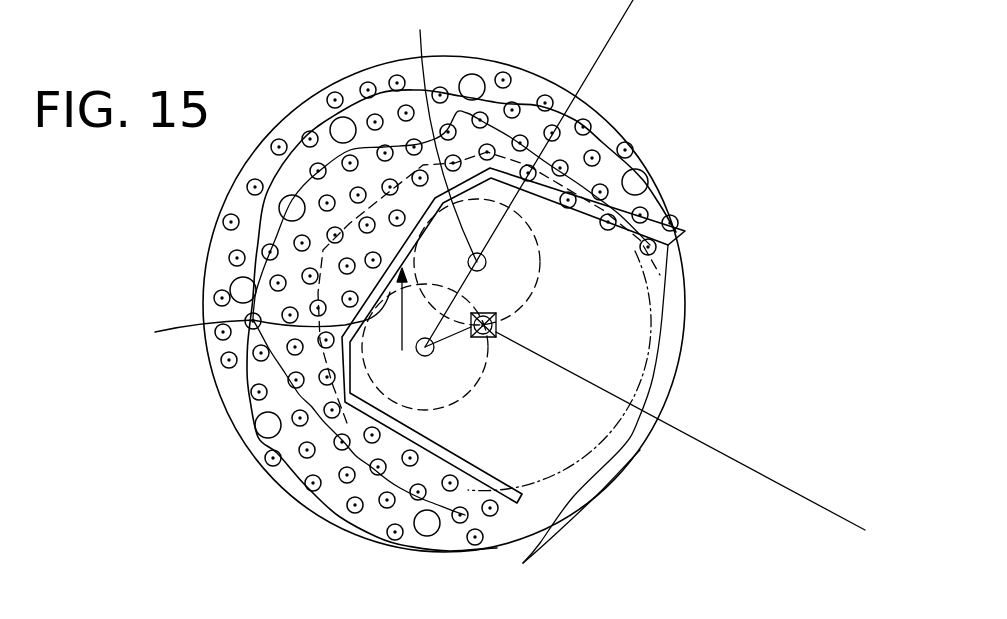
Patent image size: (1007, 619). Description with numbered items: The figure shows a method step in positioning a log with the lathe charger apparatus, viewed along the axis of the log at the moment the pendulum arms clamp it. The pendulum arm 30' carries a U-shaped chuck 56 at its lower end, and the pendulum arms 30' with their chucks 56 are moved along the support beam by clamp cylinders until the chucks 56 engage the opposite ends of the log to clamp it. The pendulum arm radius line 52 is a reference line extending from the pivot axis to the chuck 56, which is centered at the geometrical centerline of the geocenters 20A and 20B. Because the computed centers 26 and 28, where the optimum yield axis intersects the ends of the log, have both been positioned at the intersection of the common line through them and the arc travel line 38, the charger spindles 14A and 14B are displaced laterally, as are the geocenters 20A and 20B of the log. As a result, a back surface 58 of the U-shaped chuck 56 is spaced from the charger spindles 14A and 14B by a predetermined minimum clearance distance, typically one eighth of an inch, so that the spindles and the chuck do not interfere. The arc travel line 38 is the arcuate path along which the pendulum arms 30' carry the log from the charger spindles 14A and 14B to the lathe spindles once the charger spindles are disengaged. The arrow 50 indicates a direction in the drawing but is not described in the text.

The pendulum arm 30' is at (444, 282).
The geocenter 20B is at (513, 252).
The geocenter 20A is at (451, 313).
The pendulum arm radius line 52 is at (634, 8).
The U-shaped chuck 56 is at (647, 151).
The charger spindle 14B is at (655, 277).
The charger spindle 14A is at (503, 402).
The computed center 26 is at (500, 328).
The computed center 28 is at (550, 346).
The direction arrow 50 is at (424, 326).
The arc travel line 38 is at (786, 484).
The back surface 58 is at (250, 321).